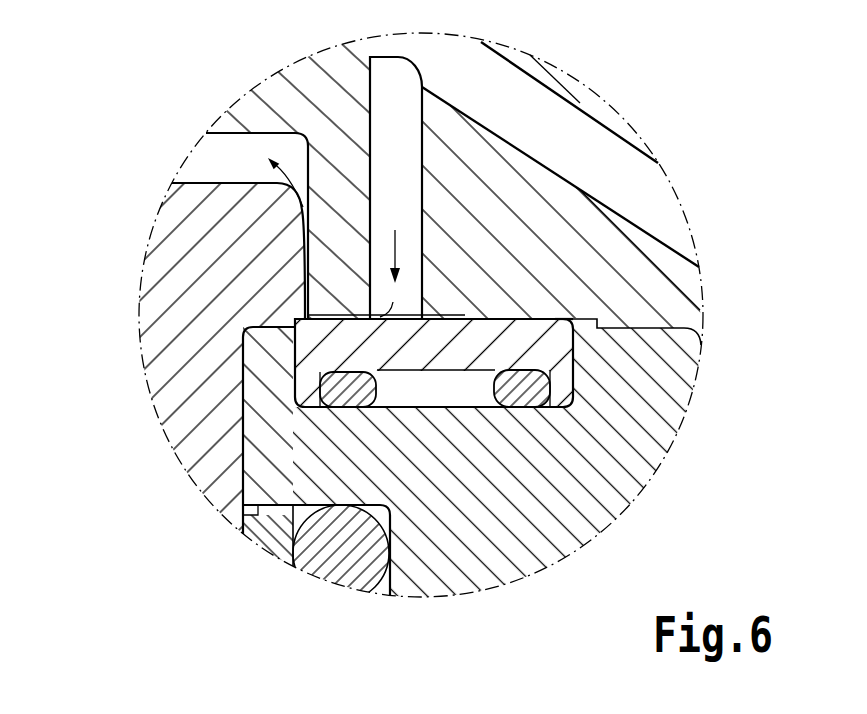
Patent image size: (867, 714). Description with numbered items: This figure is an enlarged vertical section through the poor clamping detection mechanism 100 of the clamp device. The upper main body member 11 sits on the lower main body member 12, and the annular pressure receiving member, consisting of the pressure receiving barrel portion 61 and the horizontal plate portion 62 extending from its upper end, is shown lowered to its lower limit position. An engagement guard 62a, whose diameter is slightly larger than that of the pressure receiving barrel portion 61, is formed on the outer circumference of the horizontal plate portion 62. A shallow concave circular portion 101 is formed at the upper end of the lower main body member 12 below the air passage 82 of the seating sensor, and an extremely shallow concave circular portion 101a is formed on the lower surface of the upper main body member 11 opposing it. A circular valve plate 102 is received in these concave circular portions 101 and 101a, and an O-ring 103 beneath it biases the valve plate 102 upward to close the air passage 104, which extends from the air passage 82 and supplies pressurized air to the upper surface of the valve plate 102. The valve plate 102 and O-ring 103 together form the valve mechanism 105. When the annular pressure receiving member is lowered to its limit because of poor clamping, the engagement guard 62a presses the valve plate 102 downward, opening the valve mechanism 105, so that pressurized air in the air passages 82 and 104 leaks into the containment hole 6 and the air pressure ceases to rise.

The concave circular portion 6 is at (237, 168).
The horizontal plate portion 62 is at (177, 235).
The engagement guard 62a is at (273, 300).
The pressure receiving barrel portion 61 is at (197, 362).
The air passage 104 is at (420, 148).
The air passage 82 is at (565, 89).
The poor clamping detection mechanism 100 is at (508, 226).
The upper main body member 11 is at (683, 284).
The valve mechanism 105 is at (428, 303).
The valve plate 102 is at (549, 315).
The extremely shallow concave circular portion 101a is at (563, 318).
The lower main body member 12 is at (673, 385).
The O-ring 103 is at (511, 394).
The shallow concave circular portion 101 is at (413, 407).